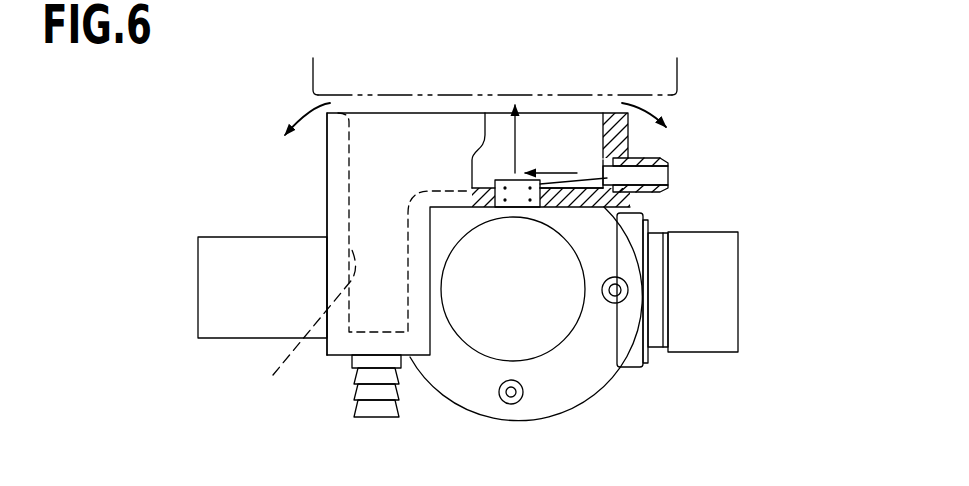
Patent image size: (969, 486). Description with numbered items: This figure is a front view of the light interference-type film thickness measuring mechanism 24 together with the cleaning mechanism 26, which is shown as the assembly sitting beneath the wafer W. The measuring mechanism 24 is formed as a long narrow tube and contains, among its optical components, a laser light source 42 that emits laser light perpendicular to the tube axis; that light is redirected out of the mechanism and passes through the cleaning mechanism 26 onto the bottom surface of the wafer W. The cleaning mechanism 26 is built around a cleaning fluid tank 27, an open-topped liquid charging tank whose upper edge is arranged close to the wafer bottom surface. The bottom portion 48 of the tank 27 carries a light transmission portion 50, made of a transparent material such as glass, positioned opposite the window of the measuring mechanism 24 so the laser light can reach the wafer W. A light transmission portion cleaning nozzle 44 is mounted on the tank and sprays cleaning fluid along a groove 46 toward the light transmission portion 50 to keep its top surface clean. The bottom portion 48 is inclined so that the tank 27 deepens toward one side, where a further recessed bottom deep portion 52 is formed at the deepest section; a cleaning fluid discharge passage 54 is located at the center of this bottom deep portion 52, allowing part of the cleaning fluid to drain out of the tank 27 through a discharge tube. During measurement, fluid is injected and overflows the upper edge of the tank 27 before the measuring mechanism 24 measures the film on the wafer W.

The wafer W is at (667, 97).
The light interference-type film thickness measuring mechanism 24 is at (610, 377).
The cleaning mechanism 26 is at (315, 169).
The cleaning fluid tank 27 is at (327, 208).
The laser light source 42 is at (197, 250).
The light transmission portion cleaning nozzle 44 is at (668, 188).
The groove 46 is at (593, 187).
The bottom portion 48 is at (560, 187).
The light transmission portion 50 is at (500, 180).
The bottom deep portion 52 is at (299, 324).
The cleaning fluid discharge passage 54 is at (353, 395).